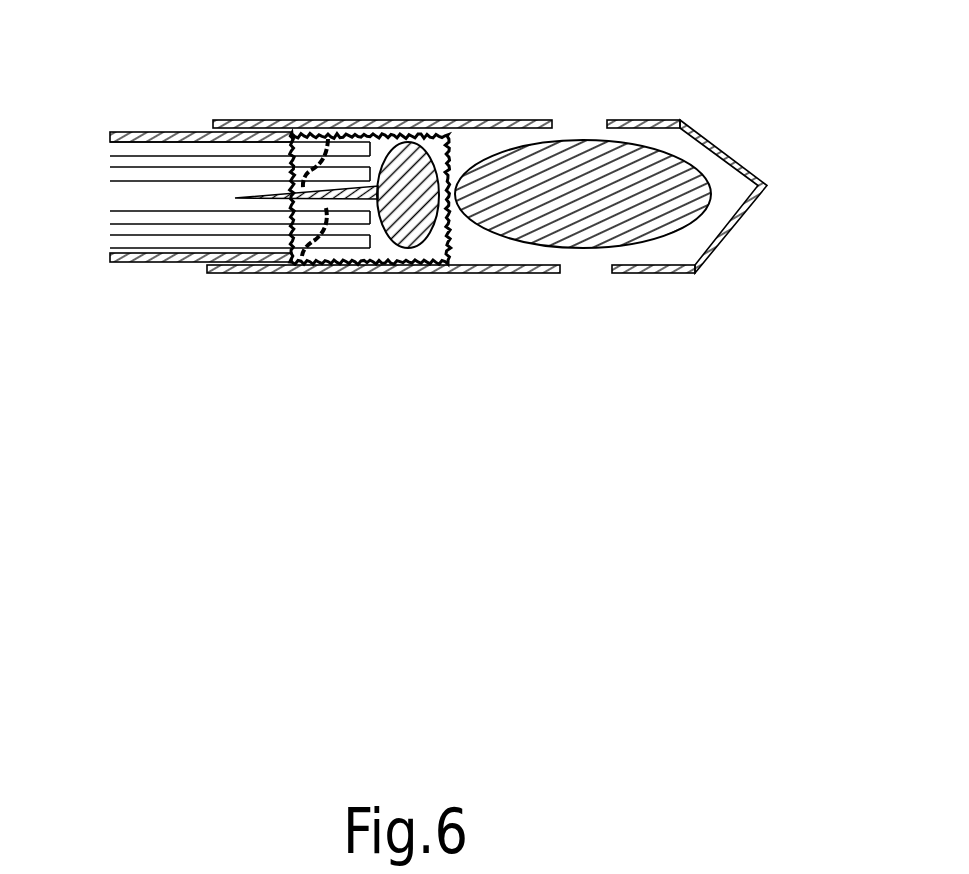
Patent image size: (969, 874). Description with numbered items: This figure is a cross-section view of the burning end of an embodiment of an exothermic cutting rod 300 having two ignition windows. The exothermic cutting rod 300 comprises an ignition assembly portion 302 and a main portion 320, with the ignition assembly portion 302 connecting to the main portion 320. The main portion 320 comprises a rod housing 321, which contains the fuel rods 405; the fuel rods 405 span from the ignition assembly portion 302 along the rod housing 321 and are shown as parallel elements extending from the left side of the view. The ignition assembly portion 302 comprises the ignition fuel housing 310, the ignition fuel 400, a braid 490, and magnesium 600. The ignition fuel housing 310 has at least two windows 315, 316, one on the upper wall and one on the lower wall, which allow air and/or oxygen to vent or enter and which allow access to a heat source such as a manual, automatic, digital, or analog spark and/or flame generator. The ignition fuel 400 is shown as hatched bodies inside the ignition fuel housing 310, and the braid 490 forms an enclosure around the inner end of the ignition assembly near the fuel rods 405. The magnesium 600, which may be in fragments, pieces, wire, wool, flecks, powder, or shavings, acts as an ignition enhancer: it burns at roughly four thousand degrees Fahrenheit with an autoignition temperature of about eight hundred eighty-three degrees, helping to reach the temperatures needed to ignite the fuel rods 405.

The exothermic cutting rod 300 is at (582, 433).
The ignition assembly portion 302 is at (675, 320).
The ignition fuel housing 310 is at (536, 186).
The window 315 is at (582, 97).
The window 316 is at (588, 274).
The main portion 320 is at (143, 117).
The rod housing 321 is at (167, 237).
The fuel rods 405 is at (180, 257).
The braid 490 is at (360, 130).
The magnesium 600 is at (318, 157).
The ignition fuel 400 is at (400, 250).